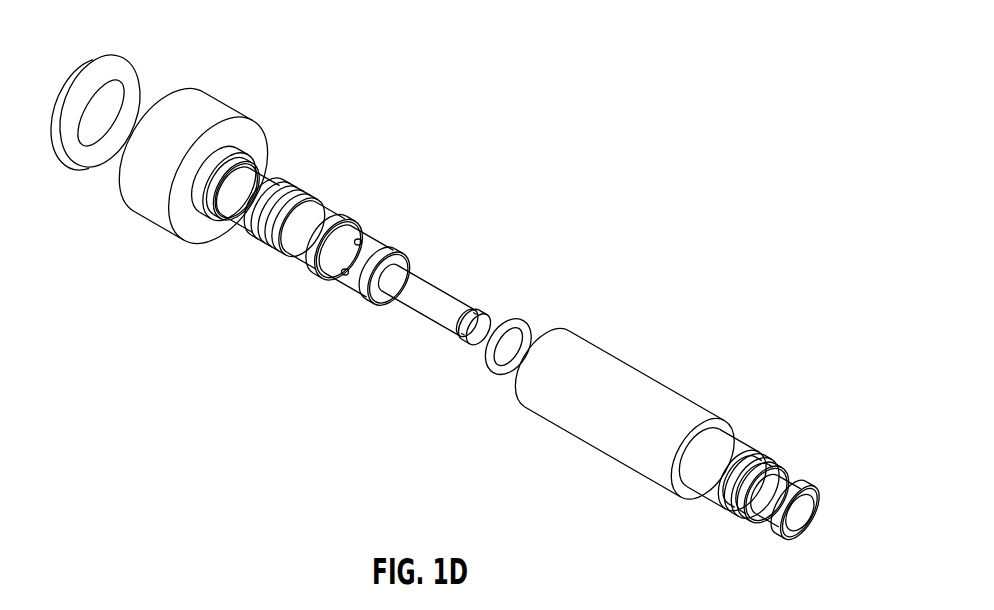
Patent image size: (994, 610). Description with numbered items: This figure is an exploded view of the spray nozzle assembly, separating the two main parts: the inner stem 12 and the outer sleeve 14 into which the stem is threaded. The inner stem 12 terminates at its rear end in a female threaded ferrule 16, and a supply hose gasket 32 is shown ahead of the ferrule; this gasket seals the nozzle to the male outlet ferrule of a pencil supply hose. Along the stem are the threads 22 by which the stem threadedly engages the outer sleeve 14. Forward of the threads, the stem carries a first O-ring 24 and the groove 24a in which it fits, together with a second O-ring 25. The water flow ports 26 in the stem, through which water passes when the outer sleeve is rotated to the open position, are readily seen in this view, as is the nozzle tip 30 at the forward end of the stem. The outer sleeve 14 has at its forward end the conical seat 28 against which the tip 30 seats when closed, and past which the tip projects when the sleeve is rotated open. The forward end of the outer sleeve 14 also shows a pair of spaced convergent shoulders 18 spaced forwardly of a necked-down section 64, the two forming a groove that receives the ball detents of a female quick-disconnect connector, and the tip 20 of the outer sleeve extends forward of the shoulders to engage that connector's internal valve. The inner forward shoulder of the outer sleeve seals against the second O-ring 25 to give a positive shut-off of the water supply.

The inner stem 12 is at (375, 203).
The outer sleeve 14 is at (601, 419).
The female threaded ferrule 16 is at (146, 164).
The convergent shoulders 18 is at (750, 524).
The tip of the outer sleeve 20 is at (790, 492).
The threads 22 is at (302, 190).
The first O-ring 24 is at (517, 318).
The groove 24a is at (326, 278).
The second O-ring 25 is at (404, 263).
The flow ports 26 is at (366, 240).
The conical seat 28 is at (804, 533).
The nozzle tip 30 is at (484, 303).
The gasket 32 is at (103, 74).
The necked-down section 64 is at (732, 452).